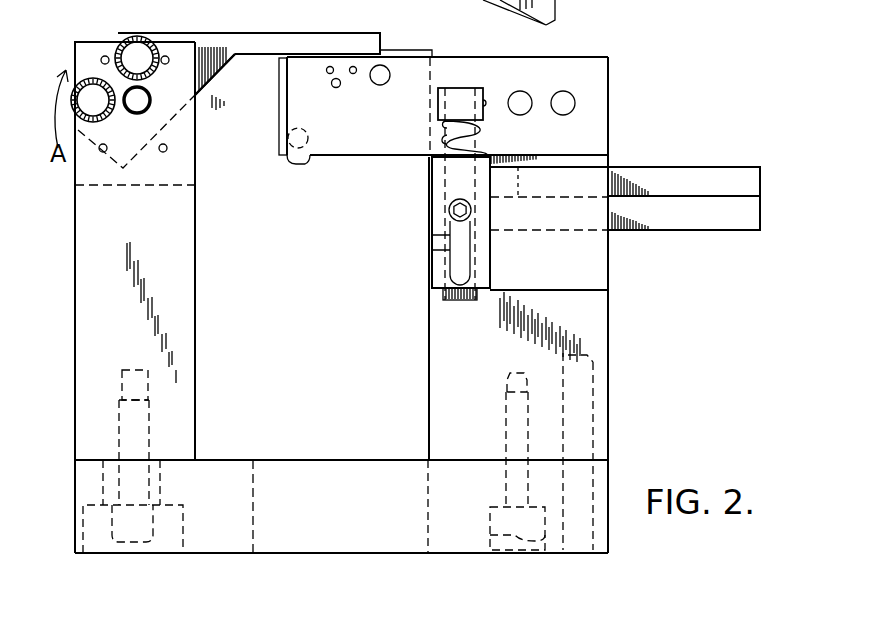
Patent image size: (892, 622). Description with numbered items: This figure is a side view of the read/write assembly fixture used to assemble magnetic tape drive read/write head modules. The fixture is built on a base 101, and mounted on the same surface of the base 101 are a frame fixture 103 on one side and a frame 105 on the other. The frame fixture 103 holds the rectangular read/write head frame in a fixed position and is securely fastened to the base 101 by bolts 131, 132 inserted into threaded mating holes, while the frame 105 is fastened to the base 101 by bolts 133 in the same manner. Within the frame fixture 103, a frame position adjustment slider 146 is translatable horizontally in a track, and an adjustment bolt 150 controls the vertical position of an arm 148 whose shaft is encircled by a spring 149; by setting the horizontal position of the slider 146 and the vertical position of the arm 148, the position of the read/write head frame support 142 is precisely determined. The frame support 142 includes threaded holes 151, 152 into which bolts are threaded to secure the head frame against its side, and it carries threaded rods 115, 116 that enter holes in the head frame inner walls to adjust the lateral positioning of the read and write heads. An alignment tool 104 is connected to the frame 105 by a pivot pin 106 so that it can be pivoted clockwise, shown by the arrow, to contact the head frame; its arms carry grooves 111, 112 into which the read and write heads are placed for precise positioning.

The base 101 is at (608, 480).
The frame fixture 103 is at (595, 323).
The alignment tool 104 is at (262, 45).
The frame 105 is at (183, 283).
The pivot pin 106 is at (117, 78).
The groove 111 is at (248, 54).
The groove 112 is at (224, 100).
The threaded rod 115 is at (330, 74).
The threaded rod 116 is at (338, 88).
The bolt 131 is at (506, 423).
The bolt 132 is at (583, 407).
The bolt 133 is at (148, 437).
The read/write head frame support 142 is at (597, 83).
The frame position adjustment slider 146 is at (665, 180).
The arm 148 is at (460, 90).
The spring 149 is at (475, 140).
The adjustment bolt 150 is at (450, 210).
The threaded hole 151 is at (290, 163).
The threaded hole 152 is at (380, 85).